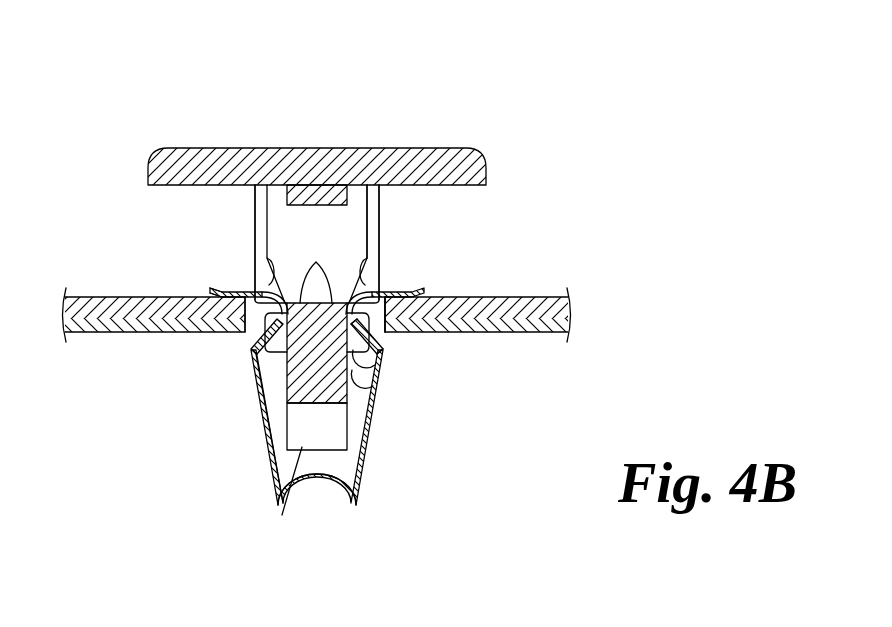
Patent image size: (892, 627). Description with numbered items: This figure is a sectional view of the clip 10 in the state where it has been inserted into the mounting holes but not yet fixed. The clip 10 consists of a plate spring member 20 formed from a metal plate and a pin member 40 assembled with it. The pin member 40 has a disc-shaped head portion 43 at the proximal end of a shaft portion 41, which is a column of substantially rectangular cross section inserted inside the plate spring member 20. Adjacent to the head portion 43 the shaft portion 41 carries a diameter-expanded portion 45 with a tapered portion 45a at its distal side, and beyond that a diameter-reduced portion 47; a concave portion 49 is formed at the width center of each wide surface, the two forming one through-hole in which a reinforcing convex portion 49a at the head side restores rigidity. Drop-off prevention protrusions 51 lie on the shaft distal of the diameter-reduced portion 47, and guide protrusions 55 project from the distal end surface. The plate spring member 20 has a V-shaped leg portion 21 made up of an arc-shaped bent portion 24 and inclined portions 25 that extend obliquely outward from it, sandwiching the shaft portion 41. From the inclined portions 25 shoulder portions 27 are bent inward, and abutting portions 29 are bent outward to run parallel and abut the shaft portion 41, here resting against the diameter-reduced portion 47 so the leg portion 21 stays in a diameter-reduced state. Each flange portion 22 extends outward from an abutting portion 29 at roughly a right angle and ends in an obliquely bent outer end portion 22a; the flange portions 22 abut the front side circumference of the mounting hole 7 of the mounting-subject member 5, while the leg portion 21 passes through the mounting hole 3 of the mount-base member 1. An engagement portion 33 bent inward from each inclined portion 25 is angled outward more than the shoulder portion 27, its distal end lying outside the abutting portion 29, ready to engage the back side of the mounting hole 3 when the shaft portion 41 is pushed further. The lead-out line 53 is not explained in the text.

The mount-base member 1 is at (205, 334).
The mounting hole 3 is at (250, 343).
The mounting-subject member 5 is at (534, 299).
The mounting hole 7 is at (445, 297).
The clip 10 is at (431, 128).
The plate spring member 20 is at (372, 496).
The leg portion 21 is at (310, 472).
The flange portion 22 is at (240, 288).
The outer end portion 22a is at (212, 290).
The bent portion 24 is at (312, 538).
The inclined portion 25 is at (358, 455).
The shoulder portion 27 is at (262, 390).
The abutting portion 29 is at (316, 270).
The engagement portion 33 is at (385, 330).
The pin member 40 is at (503, 159).
The shaft portion 41 is at (247, 194).
The head portion 43 is at (190, 150).
The diameter-expanded portion 45 is at (262, 208).
The tapered portion 45a is at (260, 258).
The diameter-reduced portion 47 is at (253, 356).
The concave portion 49 is at (280, 237).
The reinforcing convex portion 49a is at (352, 200).
The drop-off prevention protrusion 51 is at (263, 433).
The leg inner surface 53 is at (378, 221).
The guide protrusion 55 is at (282, 515).